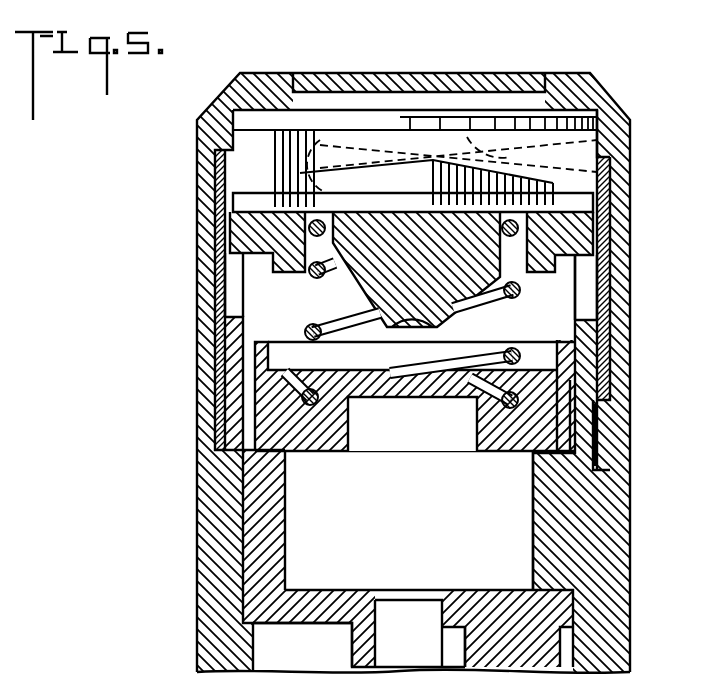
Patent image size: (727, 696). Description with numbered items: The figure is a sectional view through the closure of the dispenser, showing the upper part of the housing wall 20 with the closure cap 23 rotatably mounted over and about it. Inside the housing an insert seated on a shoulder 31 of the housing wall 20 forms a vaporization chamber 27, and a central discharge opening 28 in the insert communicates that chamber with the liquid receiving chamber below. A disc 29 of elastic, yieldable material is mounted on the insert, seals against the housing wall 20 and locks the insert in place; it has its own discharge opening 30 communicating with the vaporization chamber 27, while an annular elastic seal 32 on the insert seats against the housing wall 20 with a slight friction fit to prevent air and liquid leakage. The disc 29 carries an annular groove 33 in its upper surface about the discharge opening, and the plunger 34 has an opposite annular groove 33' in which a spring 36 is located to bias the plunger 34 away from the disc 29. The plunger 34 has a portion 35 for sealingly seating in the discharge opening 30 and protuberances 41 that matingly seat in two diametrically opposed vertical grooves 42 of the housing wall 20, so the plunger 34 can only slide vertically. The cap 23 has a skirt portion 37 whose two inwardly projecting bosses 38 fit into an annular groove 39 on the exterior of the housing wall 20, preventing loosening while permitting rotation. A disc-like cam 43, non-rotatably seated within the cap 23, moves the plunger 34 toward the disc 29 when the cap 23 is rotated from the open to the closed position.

The housing wall 20 is at (197, 557).
The closure cap 23 is at (197, 130).
The vaporization chamber 27 is at (430, 524).
The central discharge opening 28 is at (378, 601).
The disc 29 is at (317, 443).
The discharge opening 30 is at (387, 377).
The shoulder 31 is at (300, 623).
The annular elastic seal 32 is at (255, 343).
The annular groove 33 is at (305, 341).
The annular groove 33' is at (300, 262).
The plunger 34 is at (288, 193).
The sealing portion 35 is at (450, 307).
The spring 36 is at (515, 297).
The skirt portion 37 is at (612, 270).
The bosses 38 is at (603, 432).
The annular groove 39 is at (618, 407).
The protuberances 41 is at (253, 193).
The vertical grooves 42 is at (237, 278).
The cam 43 is at (414, 112).